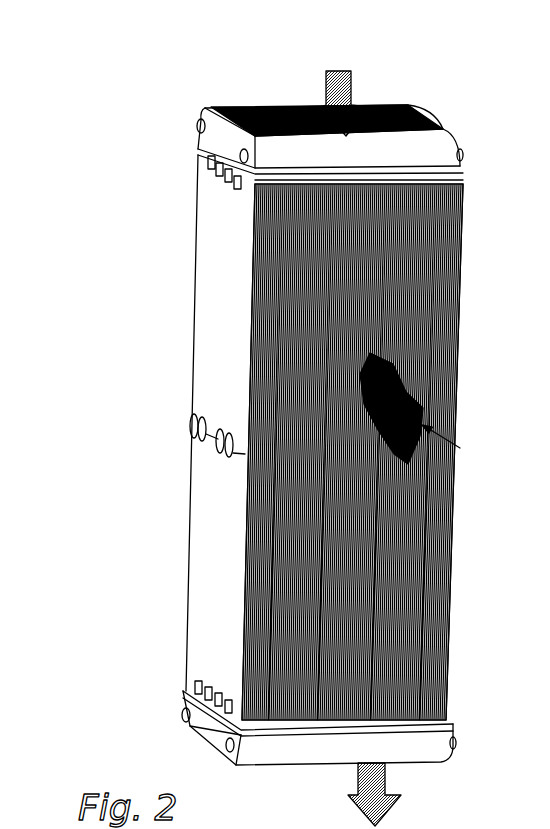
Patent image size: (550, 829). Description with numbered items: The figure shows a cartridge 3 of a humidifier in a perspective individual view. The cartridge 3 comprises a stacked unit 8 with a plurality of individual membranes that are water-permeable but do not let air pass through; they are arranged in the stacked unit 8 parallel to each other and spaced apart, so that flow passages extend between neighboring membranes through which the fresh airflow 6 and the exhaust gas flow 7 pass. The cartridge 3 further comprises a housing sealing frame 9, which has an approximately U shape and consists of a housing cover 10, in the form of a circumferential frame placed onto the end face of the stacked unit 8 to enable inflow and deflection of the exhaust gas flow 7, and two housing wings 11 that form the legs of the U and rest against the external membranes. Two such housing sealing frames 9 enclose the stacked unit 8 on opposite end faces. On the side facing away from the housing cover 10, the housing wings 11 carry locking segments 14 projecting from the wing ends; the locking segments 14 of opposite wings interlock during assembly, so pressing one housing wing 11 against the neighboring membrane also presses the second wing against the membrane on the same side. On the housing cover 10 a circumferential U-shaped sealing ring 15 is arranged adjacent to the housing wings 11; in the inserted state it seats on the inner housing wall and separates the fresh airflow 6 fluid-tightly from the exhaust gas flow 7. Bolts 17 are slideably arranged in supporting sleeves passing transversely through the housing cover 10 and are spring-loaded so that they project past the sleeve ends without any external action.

The cartridge 3 is at (158, 120).
The fresh airflow 6 is at (405, 402).
The exhaust gas flow 7 is at (323, 80).
The stacked unit 8 is at (427, 227).
The housing sealing frame 9 is at (434, 114).
The housing cover 10 is at (197, 106).
The housing wing 11 is at (197, 279).
The locking segment 14 is at (200, 410).
The sealing ring 15 is at (453, 165).
The bolt 17 is at (192, 124).